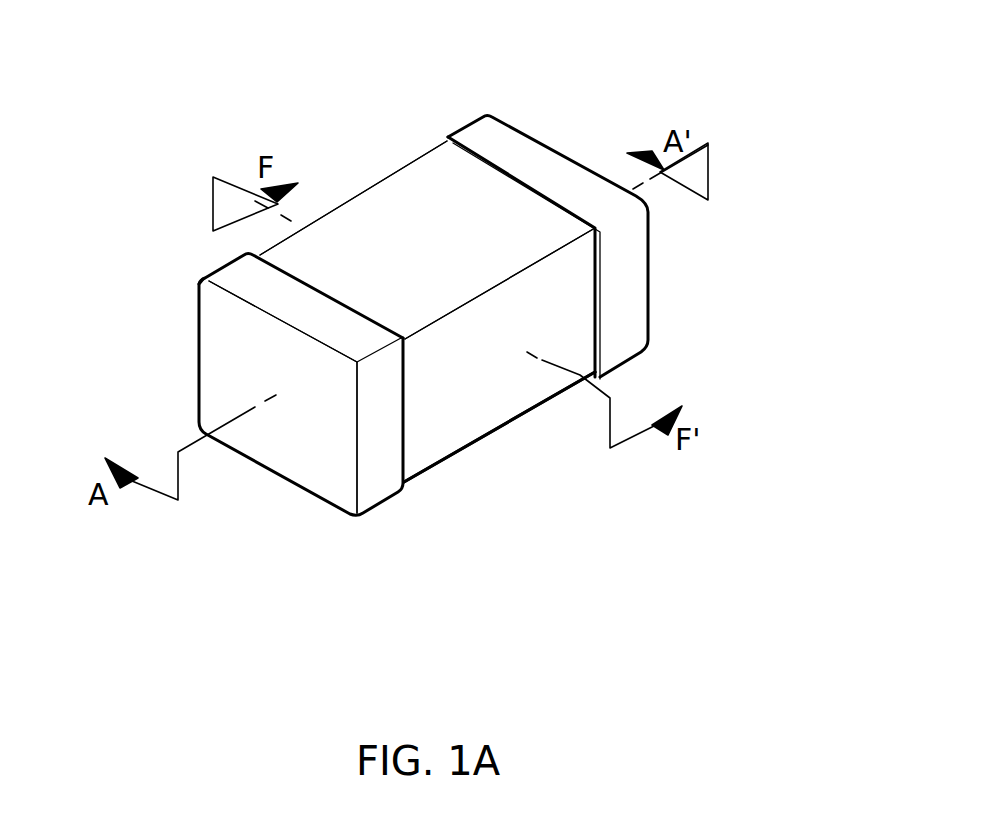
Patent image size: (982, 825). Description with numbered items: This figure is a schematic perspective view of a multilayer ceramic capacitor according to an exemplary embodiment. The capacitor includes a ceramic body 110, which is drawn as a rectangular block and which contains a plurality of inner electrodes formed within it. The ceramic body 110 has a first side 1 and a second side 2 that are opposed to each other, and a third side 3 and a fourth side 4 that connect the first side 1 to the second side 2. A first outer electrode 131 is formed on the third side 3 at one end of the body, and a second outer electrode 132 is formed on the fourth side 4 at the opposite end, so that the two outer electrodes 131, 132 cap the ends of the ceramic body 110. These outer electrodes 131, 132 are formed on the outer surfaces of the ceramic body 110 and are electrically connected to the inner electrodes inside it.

The first side 1 is at (378, 172).
The second side 2 is at (498, 393).
The third side 3 is at (302, 450).
The fourth side 4 is at (562, 138).
The ceramic body 110 is at (433, 180).
The first outer electrode 131 is at (377, 493).
The second outer electrode 132 is at (638, 315).